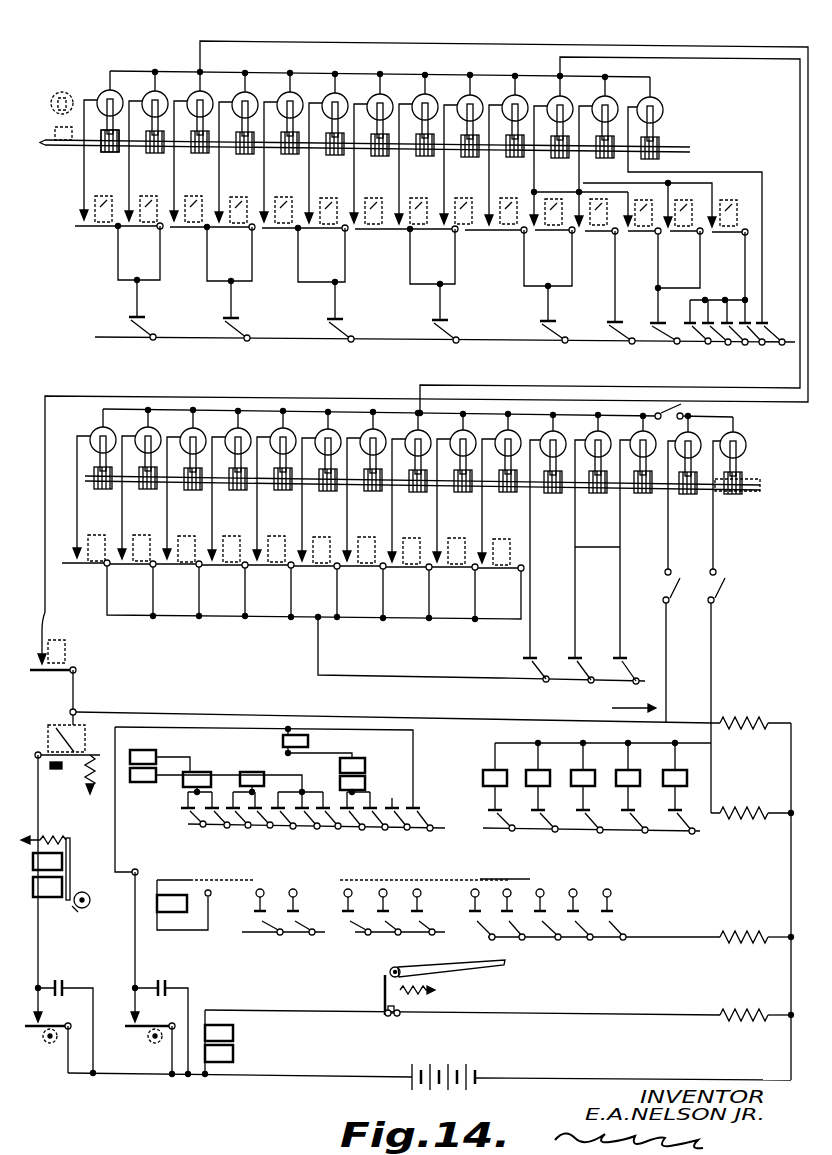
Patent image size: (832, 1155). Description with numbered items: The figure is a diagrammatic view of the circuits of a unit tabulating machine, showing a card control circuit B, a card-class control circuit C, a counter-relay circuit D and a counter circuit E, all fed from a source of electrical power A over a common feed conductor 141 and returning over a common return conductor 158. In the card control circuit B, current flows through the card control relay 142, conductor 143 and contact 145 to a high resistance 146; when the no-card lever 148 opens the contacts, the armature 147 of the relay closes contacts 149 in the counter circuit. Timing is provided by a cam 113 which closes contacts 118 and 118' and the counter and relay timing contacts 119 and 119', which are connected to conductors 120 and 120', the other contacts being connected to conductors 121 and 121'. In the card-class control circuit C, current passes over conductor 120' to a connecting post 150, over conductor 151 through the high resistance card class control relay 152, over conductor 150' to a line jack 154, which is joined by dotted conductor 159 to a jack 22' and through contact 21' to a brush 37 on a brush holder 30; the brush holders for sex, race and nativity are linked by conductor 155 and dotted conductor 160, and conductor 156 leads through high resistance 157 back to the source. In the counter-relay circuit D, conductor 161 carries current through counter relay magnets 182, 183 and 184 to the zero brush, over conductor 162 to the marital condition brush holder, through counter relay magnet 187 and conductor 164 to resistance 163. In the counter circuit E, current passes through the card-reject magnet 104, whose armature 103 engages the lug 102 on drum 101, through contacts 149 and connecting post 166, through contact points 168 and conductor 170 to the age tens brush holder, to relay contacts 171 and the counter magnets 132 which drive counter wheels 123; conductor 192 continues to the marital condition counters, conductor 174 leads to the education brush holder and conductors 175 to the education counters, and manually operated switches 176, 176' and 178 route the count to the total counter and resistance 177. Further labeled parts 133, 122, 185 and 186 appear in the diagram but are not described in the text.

The conductor 192 is at (405, 43).
The relay 133 is at (104, 94).
The counter magnet 132 is at (294, 93).
The shaft 122 is at (50, 150).
The counter wheel 123 is at (100, 158).
The counter relay magnet 183 is at (601, 194).
The relay contact 186 is at (682, 238).
The counter relay magnet 184 is at (606, 238).
The relay contact 185 is at (331, 193).
The counter relay magnet 182 is at (296, 735).
The counter relay magnet 187 is at (95, 535).
The conductor 162 is at (731, 195).
The relay contacts 171 is at (268, 236).
The conductor 170 is at (63, 626).
The brush 37 is at (146, 327).
The brush holder 30 is at (398, 336).
The manually operated switch 176 is at (681, 390).
The manually operated switch 176' is at (685, 581).
The manually operated switch 178 is at (720, 590).
The conductors 175 is at (575, 562).
The conductor 174 is at (450, 670).
The counter circuit E is at (738, 522).
The card class control relay 152 is at (68, 652).
The contact points 168 is at (30, 684).
The connecting post 166 is at (78, 710).
The card control relay 142 is at (60, 726).
The contacts 149 is at (68, 776).
The conductor 120 is at (55, 871).
The armature 103 is at (86, 838).
The magnet 104 is at (64, 882).
The drum 101 is at (91, 900).
The lug 102 is at (74, 908).
The counter timing contact 119 is at (66, 1028).
The contact 118 is at (40, 1030).
The cam 113 is at (52, 1050).
The conductor 121 is at (220, 1086).
The connecting post 150 is at (132, 801).
The conductor 150' is at (170, 930).
The conductor 120' is at (150, 942).
The relay timing contact 119' is at (143, 1028).
The contact 118' is at (139, 1032).
The conductor 121' is at (169, 1087).
The conductor 151 is at (158, 890).
The line jack 154 is at (205, 888).
The jack 22' is at (222, 889).
The dotted conductor 159 is at (248, 880).
The dotted conductor 160 is at (468, 880).
The contact 21' is at (311, 854).
The conductor 161 is at (128, 822).
The card-class control circuit C is at (626, 908).
The conductor 155 is at (362, 940).
The conductor 164 is at (688, 734).
The counter-relay circuit D is at (712, 772).
The resistance 177 is at (760, 712).
The resistance 163 is at (764, 804).
The common return conductor 158 is at (791, 864).
The conductor 156 is at (694, 926).
The high resistance 157 is at (747, 932).
The high resistance 146 is at (744, 1004).
The conductor 143 is at (298, 1011).
The common feed conductor 141 is at (282, 1076).
The source of electrical power A is at (482, 1062).
The card control circuit B is at (552, 1004).
The no-card lever 148 is at (450, 970).
The contact 145 is at (404, 1010).
The armature 147 is at (384, 1000).